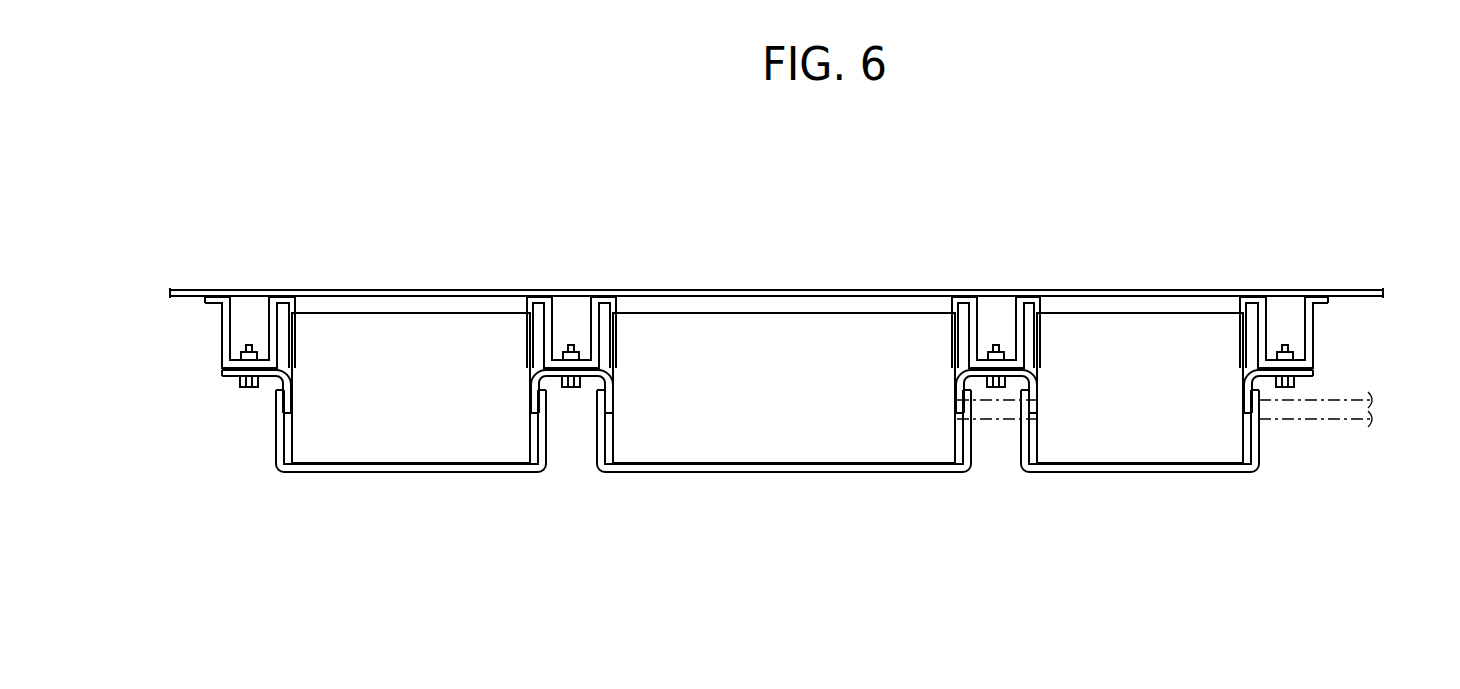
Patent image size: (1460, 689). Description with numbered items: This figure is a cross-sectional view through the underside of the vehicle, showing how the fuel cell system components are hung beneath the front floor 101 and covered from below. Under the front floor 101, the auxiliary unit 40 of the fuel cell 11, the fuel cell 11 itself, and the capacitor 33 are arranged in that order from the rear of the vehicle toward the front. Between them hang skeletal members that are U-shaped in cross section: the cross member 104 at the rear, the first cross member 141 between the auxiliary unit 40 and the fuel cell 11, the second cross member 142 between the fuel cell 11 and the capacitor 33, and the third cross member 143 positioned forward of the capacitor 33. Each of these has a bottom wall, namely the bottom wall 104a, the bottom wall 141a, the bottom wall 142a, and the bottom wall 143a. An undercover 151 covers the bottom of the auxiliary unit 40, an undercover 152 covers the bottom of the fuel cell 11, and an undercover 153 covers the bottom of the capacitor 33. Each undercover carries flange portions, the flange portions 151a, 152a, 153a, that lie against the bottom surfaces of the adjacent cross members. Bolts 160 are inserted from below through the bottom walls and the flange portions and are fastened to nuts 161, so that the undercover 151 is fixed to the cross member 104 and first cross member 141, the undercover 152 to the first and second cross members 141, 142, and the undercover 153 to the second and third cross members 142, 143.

The front floor 101 is at (935, 290).
The fuel cell 11 is at (842, 313).
The capacitor 33 is at (413, 313).
The auxiliary unit 40 is at (1125, 313).
The cross member 104 is at (1314, 327).
The bottom wall 104a is at (1314, 377).
The first cross member 141 is at (1023, 330).
The bottom wall 141a is at (1022, 375).
The second cross member 142 is at (598, 328).
The bottom wall 142a is at (596, 375).
The third cross member 143 is at (222, 327).
The bottom wall 143a is at (222, 375).
The undercover 151 is at (1162, 477).
The flange portion 151a is at (1015, 383).
The undercover 152 is at (813, 477).
The flange portion 152a is at (590, 383).
The undercover 153 is at (420, 473).
The flange portion 153a is at (276, 388).
The bolt 160 is at (246, 388).
The nut 161 is at (250, 345).